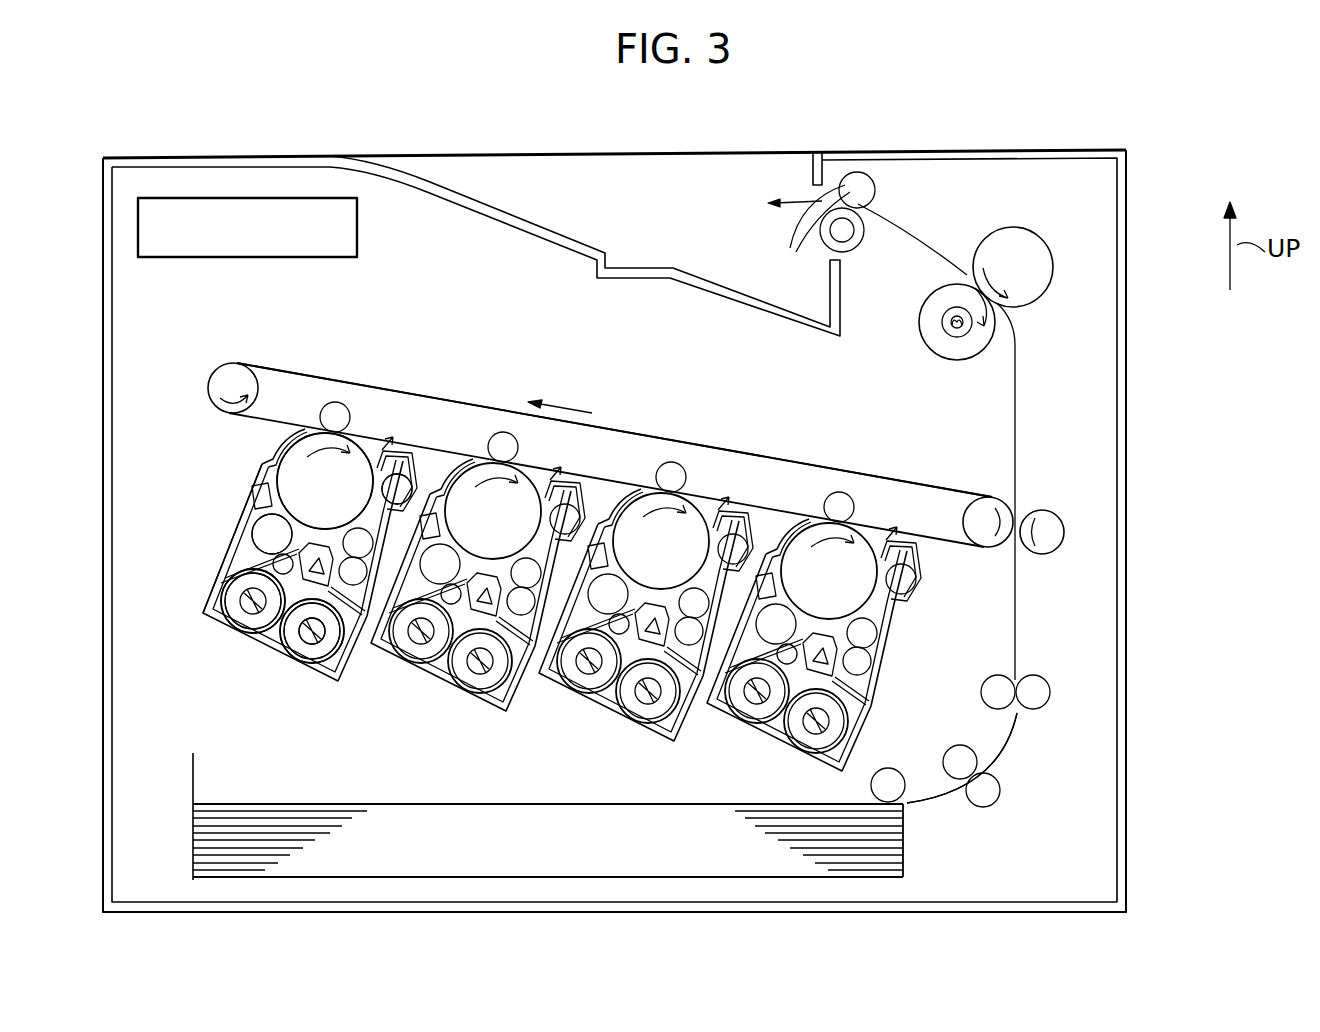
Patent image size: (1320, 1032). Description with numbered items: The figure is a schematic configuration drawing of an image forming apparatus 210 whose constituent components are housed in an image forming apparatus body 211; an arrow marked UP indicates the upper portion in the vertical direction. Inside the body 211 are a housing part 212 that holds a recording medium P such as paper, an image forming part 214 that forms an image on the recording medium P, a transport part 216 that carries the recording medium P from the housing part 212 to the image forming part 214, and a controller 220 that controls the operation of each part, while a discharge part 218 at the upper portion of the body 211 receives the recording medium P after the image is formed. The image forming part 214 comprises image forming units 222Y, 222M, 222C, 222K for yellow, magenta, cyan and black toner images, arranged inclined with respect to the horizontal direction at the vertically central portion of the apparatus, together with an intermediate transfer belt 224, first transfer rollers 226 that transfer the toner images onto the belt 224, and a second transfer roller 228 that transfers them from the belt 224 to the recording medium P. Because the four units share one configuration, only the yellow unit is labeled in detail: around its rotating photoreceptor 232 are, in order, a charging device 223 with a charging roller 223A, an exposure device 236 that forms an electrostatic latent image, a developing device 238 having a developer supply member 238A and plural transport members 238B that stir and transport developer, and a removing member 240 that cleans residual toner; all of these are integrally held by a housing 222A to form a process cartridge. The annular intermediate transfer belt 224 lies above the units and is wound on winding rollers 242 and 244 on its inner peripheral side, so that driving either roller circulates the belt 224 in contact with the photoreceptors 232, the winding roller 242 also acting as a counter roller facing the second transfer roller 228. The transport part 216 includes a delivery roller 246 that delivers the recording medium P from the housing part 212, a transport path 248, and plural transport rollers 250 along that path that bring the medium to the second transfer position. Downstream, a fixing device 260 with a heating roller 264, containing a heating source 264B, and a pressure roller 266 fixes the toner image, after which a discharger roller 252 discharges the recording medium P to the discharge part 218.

The image forming apparatus 210 is at (1160, 178).
The image forming apparatus body 211 is at (1130, 352).
The housing part 212 is at (514, 810).
The image forming part 214 is at (930, 620).
The transport part 216 is at (952, 816).
The discharge part 218 is at (675, 268).
The controller 220 is at (273, 195).
The image forming unit 222Y is at (250, 472).
The image forming unit 222M is at (465, 716).
The image forming unit 222C is at (600, 730).
The image forming unit 222K is at (770, 756).
The housing 222A is at (205, 617).
The charging device 223 is at (322, 670).
The charging roller 223A is at (340, 652).
The intermediate transfer belt 224 is at (648, 433).
The first transfer rollers 226 is at (352, 420).
The second transfer roller 228 is at (1052, 512).
The photoreceptor 232 is at (330, 383).
The exposure device 236 is at (325, 481).
The developing device 238 is at (228, 578).
The developer supply member 238A is at (262, 530).
The transport members 238B is at (300, 690).
The removing member 240 is at (371, 482).
The winding roller 242 is at (985, 500).
The winding roller 244 is at (258, 375).
The delivery roller 246 is at (892, 767).
The transport path 248 is at (1018, 672).
The transport rollers 250 is at (1046, 706).
The discharger roller 252 is at (795, 248).
The fixing device 260 is at (943, 388).
The heating roller 264 is at (1000, 334).
The heating source 264B is at (957, 340).
The pressure roller 266 is at (1012, 228).
The recording medium P is at (285, 808).